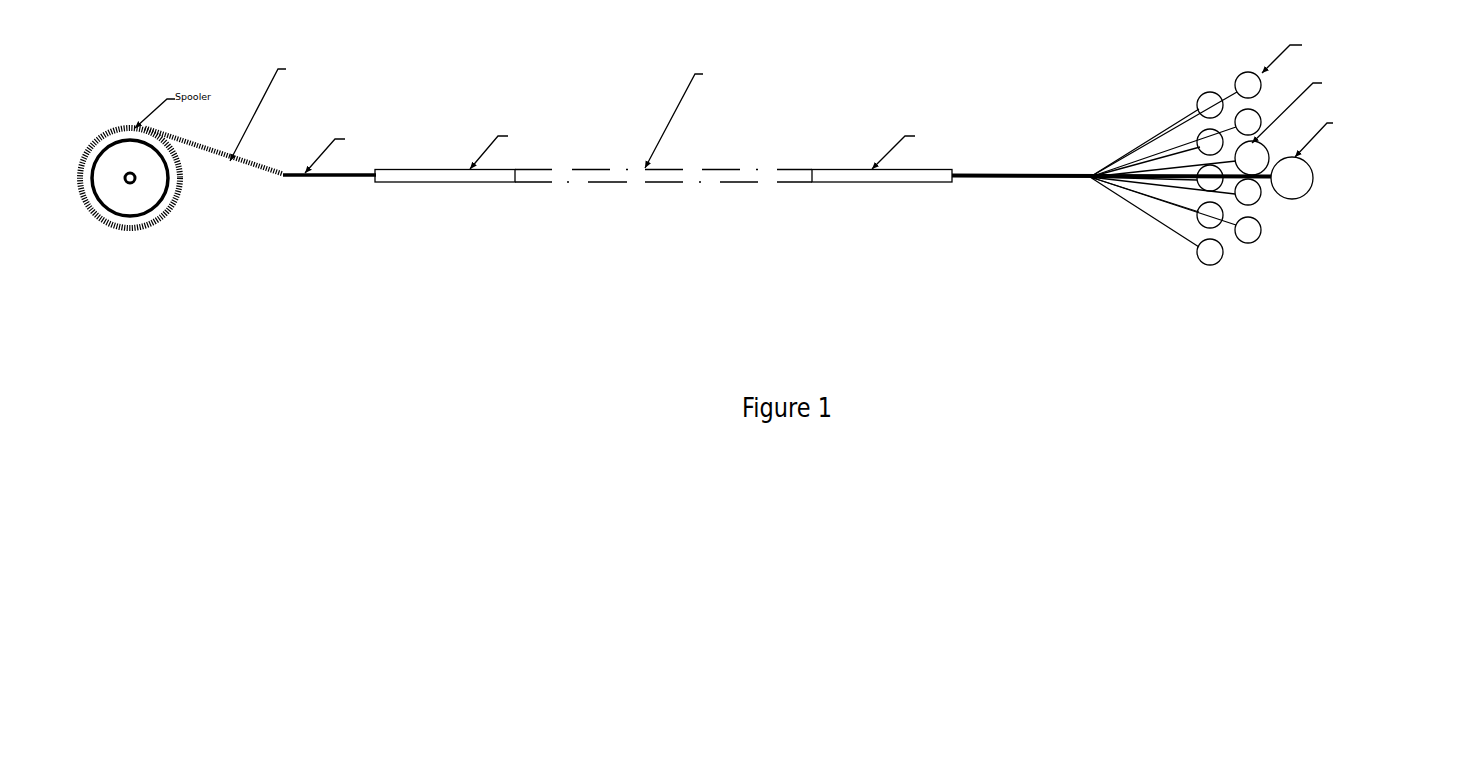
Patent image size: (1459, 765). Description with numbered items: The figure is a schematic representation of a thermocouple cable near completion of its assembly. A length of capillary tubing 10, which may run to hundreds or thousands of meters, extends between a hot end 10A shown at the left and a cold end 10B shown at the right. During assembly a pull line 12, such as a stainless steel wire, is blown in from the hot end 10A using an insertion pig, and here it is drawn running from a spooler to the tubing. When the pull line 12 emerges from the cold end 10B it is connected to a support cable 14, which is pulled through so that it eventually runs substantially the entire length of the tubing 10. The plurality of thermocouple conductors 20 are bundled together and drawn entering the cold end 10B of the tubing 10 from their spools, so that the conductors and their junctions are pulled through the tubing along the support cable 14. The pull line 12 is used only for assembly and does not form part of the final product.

The tubing 10 is at (703, 172).
The hot end 10A is at (463, 225).
The cold end 10B is at (904, 199).
The pull line 12 is at (295, 95).
The support cable 14 is at (365, 134).
The thermocouple conductors 20 is at (1202, 144).